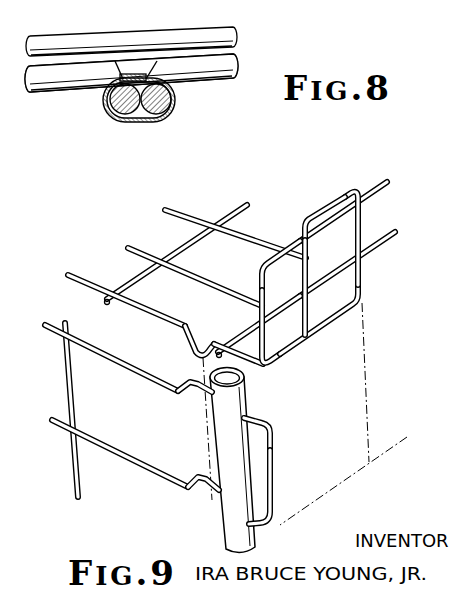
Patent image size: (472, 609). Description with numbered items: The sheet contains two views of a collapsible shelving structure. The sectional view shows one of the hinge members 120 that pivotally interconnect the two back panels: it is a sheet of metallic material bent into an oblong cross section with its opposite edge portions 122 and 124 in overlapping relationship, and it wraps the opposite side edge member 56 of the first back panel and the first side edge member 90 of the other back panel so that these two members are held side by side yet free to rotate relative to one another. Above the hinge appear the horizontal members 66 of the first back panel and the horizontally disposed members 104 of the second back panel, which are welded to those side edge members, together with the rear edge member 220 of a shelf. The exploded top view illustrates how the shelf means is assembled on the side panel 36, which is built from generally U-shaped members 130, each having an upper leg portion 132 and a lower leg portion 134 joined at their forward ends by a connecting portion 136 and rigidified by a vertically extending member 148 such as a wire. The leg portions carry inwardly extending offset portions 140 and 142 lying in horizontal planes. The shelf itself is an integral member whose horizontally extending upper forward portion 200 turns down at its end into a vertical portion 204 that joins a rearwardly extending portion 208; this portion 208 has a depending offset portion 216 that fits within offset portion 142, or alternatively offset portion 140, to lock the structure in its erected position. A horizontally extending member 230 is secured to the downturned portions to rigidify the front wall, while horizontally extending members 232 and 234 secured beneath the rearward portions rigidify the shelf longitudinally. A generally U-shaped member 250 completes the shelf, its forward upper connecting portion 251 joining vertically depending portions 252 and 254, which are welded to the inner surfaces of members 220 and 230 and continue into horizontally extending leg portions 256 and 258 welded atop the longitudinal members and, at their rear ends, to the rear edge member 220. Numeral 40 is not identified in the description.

In FIG. 8, the rear edge member 220 is at (69, 36).
In FIG. 8, the horizontally disposed members 104 is at (64, 92).
In FIG. 8, the horizontal members 66 is at (197, 81).
In FIG. 8, the edge portion 124 is at (124, 77).
In FIG. 8, the edge portion 122 is at (147, 78).
In FIG. 8, the opposite side edge member 56 is at (157, 114).
In FIG. 8, the first side edge member 90 is at (111, 118).
In FIG. 8, the hinge member 120 is at (142, 124).
In FIG. 9, the rack assembly 40 is at (249, 250).
In FIG. 9, the horizontally extending member 234 is at (242, 206).
In FIG. 9, the horizontally extending member 230 is at (373, 250).
In FIG. 9, the horizontally extending member 232 is at (252, 336).
In FIG. 9, the horizontally extending leg portion 256 is at (187, 272).
In FIG. 9, the rearwardly extending portion 208 is at (165, 321).
In FIG. 9, the depending offset portion 216 is at (192, 352).
In FIG. 9, the upper forward portion 200 is at (383, 191).
In FIG. 9, the horizontally extending leg portion 258 is at (258, 252).
In FIG. 9, the downwardly extending portion 204 is at (268, 327).
In FIG. 9, the vertically depending portion 252 is at (309, 313).
In FIG. 9, the vertically depending portion 254 is at (364, 225).
In FIG. 9, the U-shaped member 250 is at (330, 195).
In FIG. 9, the forward upper connecting portion 251 is at (313, 216).
In FIG. 9, the side panel 36 is at (262, 540).
In FIG. 9, the vertically extending member 148 is at (79, 492).
In FIG. 9, the upper leg portion 132 is at (137, 436).
In FIG. 9, the offset portion 140 is at (196, 396).
In FIG. 9, the lower leg portion 134 is at (135, 473).
In FIG. 9, the offset portion 142 is at (205, 491).
In FIG. 9, the U-shaped member 130 is at (289, 471).
In FIG. 9, the connecting portion 136 is at (268, 447).